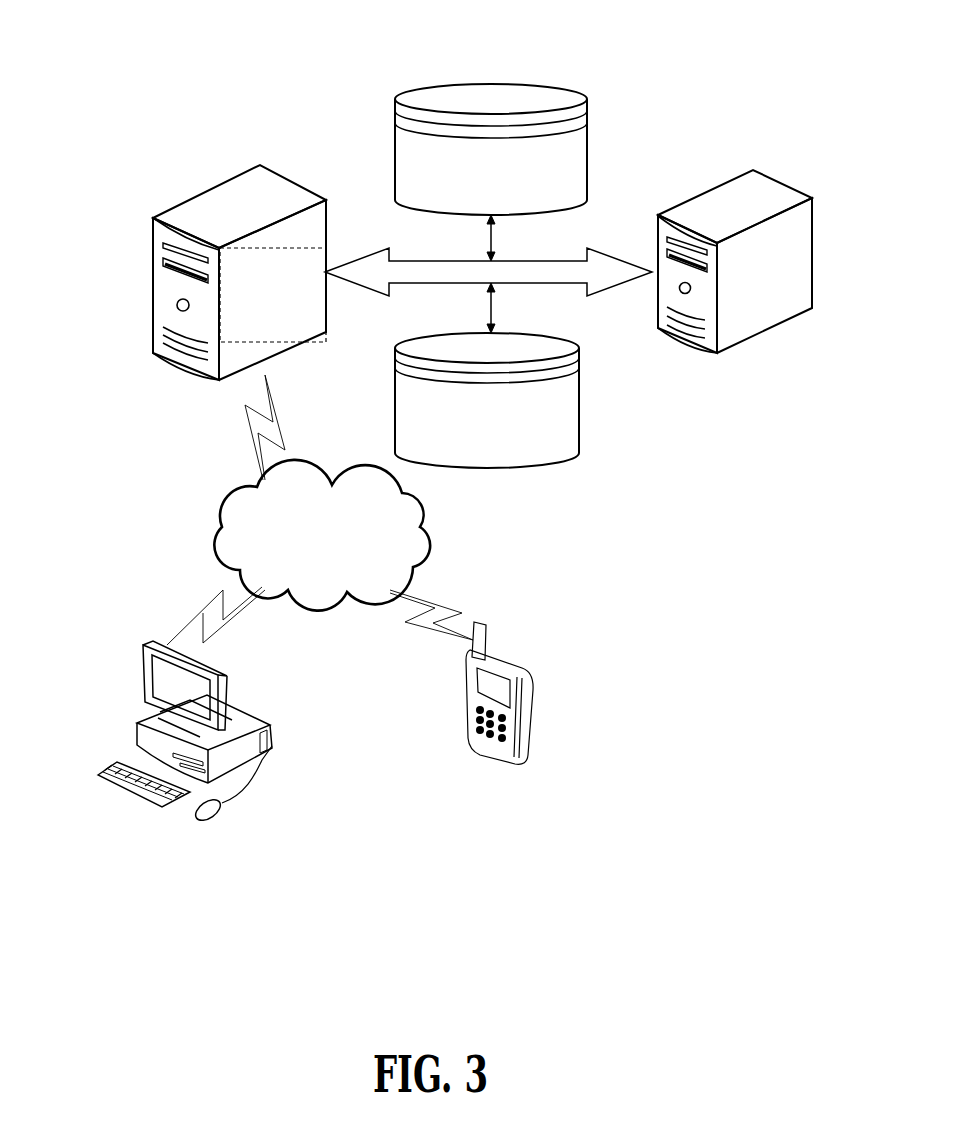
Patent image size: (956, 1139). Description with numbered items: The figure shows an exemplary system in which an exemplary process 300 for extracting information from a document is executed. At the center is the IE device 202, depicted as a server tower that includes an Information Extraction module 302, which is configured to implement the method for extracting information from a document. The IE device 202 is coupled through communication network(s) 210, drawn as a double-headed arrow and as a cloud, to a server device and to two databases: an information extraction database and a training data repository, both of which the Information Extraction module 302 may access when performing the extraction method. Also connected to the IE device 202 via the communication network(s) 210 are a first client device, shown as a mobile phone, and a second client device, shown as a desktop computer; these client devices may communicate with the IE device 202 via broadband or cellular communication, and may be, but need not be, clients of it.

The exemplary process 300 is at (154, 84).
The IE device 202 is at (167, 213).
The Information Extraction module 302 is at (273, 295).
The communication network 210 is at (433, 413).